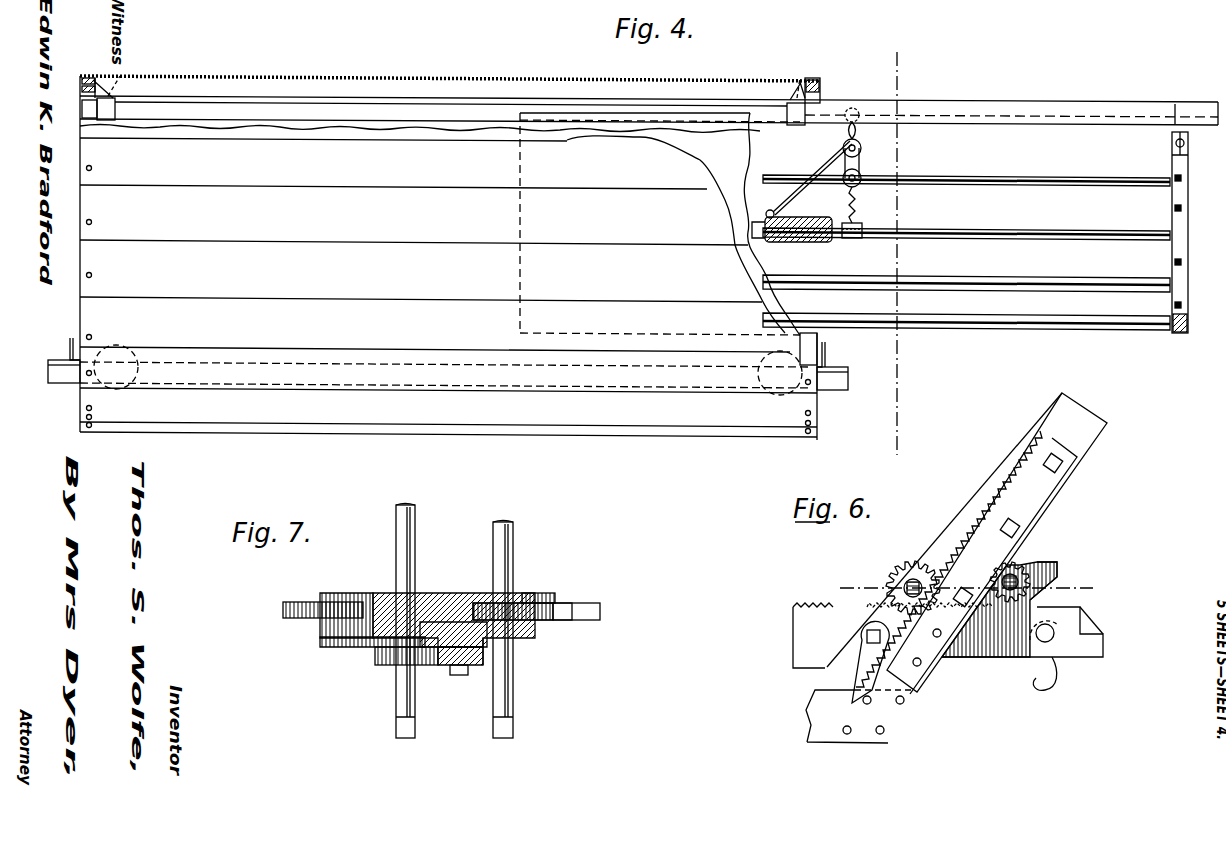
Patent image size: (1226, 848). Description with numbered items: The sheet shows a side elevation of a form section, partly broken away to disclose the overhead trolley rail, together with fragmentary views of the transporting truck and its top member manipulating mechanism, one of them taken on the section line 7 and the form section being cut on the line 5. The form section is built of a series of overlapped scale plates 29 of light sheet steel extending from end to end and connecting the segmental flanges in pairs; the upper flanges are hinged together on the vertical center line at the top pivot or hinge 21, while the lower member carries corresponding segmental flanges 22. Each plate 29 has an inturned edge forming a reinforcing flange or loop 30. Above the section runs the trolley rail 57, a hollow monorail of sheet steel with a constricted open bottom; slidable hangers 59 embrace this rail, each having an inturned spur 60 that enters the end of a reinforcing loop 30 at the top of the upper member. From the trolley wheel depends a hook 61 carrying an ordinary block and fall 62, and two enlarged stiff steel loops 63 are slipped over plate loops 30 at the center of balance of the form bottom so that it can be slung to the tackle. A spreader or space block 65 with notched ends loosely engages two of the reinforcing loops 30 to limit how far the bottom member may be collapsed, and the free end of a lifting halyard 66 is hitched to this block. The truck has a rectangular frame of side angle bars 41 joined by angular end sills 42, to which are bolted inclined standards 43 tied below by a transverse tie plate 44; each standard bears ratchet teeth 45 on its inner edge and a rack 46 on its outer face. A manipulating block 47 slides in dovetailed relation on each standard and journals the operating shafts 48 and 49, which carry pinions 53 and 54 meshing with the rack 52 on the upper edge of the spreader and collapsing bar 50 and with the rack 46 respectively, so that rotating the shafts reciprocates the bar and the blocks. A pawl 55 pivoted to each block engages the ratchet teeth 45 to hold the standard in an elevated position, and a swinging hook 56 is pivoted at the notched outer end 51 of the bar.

In FIG. 4, the section line 5- 5 is at (893, 251).
In FIG. 6, the section line 7- 7 is at (960, 589).
In FIG. 4, the top pivot or hinge 21 is at (84, 84).
In FIG. 4, the segmental flange 22 is at (1188, 224).
In FIG. 4, the scale plate 29 is at (427, 77).
In FIG. 4, the reinforcing flange or loop 30 is at (1012, 228).
In FIG. 4, the side angle bar 41 is at (48, 372).
In FIG. 4, the angular end sill 42 is at (835, 350).
In FIG. 7, the inclined standard 43 is at (483, 668).
In FIG. 6, the inclined standard 43 is at (1060, 428).
In FIG. 6, the transverse tie plate 44 is at (810, 722).
In FIG. 6, the ratchet teeth 45 is at (960, 557).
In FIG. 7, the rack 46 is at (446, 676).
In FIG. 6, the rack 46 is at (1050, 497).
In FIG. 7, the manipulating block 47 is at (442, 600).
In FIG. 6, the manipulating block 47 is at (978, 663).
In FIG. 7, the operating shaft 48 is at (513, 566).
In FIG. 6, the operating shaft 48 is at (1025, 566).
In FIG. 7, the operating shaft 49 is at (396, 564).
In FIG. 6, the operating shaft 49 is at (904, 588).
In FIG. 7, the spreader and collapsing bar 50 is at (554, 620).
In FIG. 6, the spreader and collapsing bar 50 is at (793, 641).
In FIG. 7, the notched outer end 51 is at (585, 608).
In FIG. 6, the notched outer end 51 is at (1082, 628).
In FIG. 7, the rack 52 is at (323, 598).
In FIG. 6, the rack 52 is at (812, 606).
In FIG. 7, the pinion 53 is at (541, 594).
In FIG. 6, the pinion 53 is at (1050, 578).
In FIG. 7, the pinion 54 is at (385, 666).
In FIG. 6, the pinion 54 is at (911, 566).
In FIG. 6, the pawl 55 is at (850, 676).
In FIG. 6, the swinging hook 56 is at (1052, 684).
In FIG. 4, the trolley rail 57 is at (347, 110).
In FIG. 4, the slidable hanger 59 is at (108, 120).
In FIG. 4, the inturned spur 60 is at (458, 75).
In FIG. 4, the hook 61 is at (858, 143).
In FIG. 4, the block and fall 62 is at (860, 186).
In FIG. 4, the steel loop 63 is at (852, 246).
In FIG. 4, the spreader or space block 65 is at (803, 241).
In FIG. 4, the lifting halyard 66 is at (793, 190).